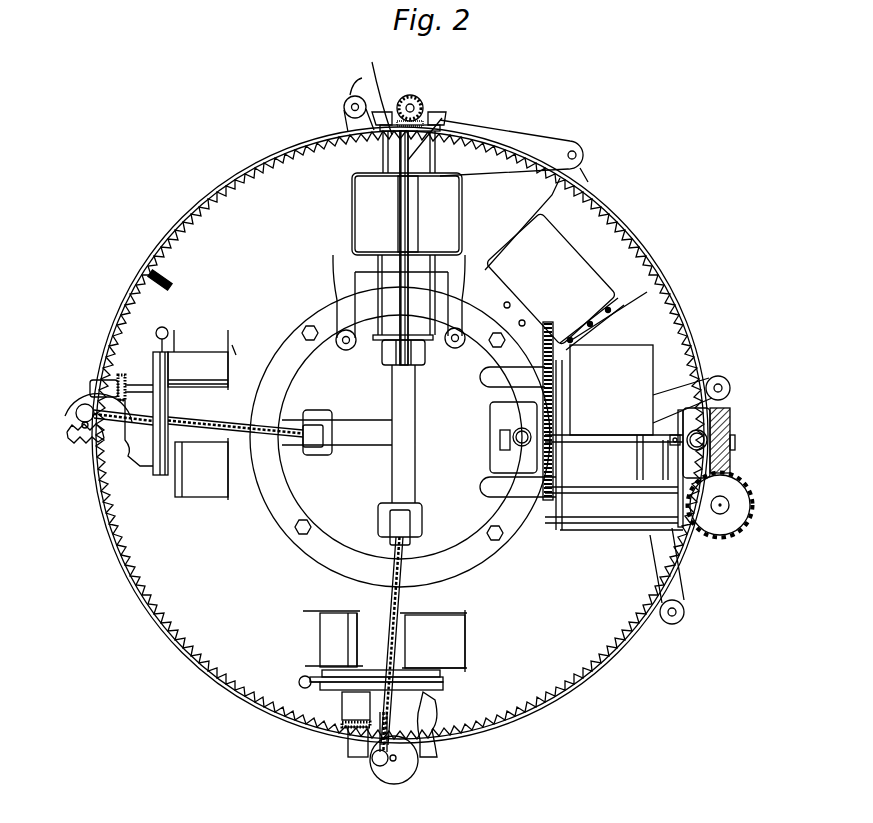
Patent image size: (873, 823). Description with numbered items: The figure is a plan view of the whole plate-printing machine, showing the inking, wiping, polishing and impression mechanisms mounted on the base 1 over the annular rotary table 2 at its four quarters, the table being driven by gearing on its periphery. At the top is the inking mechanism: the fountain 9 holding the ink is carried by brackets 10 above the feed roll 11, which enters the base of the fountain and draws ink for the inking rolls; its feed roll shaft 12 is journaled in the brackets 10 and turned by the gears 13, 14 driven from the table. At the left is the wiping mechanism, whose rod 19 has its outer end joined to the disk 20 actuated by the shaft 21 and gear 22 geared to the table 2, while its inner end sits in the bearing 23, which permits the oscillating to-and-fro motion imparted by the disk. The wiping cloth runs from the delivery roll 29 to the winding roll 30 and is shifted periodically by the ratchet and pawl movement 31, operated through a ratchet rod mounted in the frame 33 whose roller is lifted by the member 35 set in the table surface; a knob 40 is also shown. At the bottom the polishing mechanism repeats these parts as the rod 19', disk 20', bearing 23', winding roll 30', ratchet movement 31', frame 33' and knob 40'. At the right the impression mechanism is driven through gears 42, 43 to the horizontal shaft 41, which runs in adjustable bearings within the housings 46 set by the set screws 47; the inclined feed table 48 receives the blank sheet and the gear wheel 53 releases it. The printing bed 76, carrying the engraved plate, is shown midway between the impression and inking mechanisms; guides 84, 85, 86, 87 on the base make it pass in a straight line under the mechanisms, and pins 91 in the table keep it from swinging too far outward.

The base 1 is at (290, 372).
The annular rotary table 2 is at (573, 666).
The fountain 9 is at (355, 198).
The brackets 10 is at (372, 90).
The feed roll 11 is at (418, 216).
The feed roll shaft 12 is at (470, 129).
The gear 13 is at (424, 130).
The gear 14 is at (422, 102).
The rod 19 is at (235, 413).
The rod 19' is at (406, 641).
The disk 20 is at (92, 405).
The disk 20' is at (374, 755).
The shaft 21 is at (81, 425).
The gear 22 is at (70, 440).
The bearing 23 is at (328, 449).
The bearing 23' is at (380, 524).
The delivery roll 29 is at (229, 478).
The winding roll 30 is at (212, 401).
The winding roll 30' is at (381, 635).
The ratchet and pawl movement 31 is at (105, 363).
The ratchet movement 31' is at (329, 729).
The frame 33 is at (135, 451).
The frame 33' is at (463, 729).
The member 35 is at (152, 273).
The knob 40 is at (182, 331).
The knob 40' is at (287, 671).
The horizontal shaft 41 is at (736, 444).
The gear 42 is at (735, 522).
The gear 43 is at (732, 471).
The housings 46 is at (492, 409).
The set screws 47 is at (513, 440).
The inclined feed table 48 is at (655, 356).
The gear wheel 53 is at (543, 358).
The printing bed 76 is at (578, 262).
The guide 84 is at (505, 490).
The outer guide 85 is at (655, 565).
The guide 86 is at (335, 268).
The outer guide 87 is at (520, 178).
The pins 91 is at (518, 323).